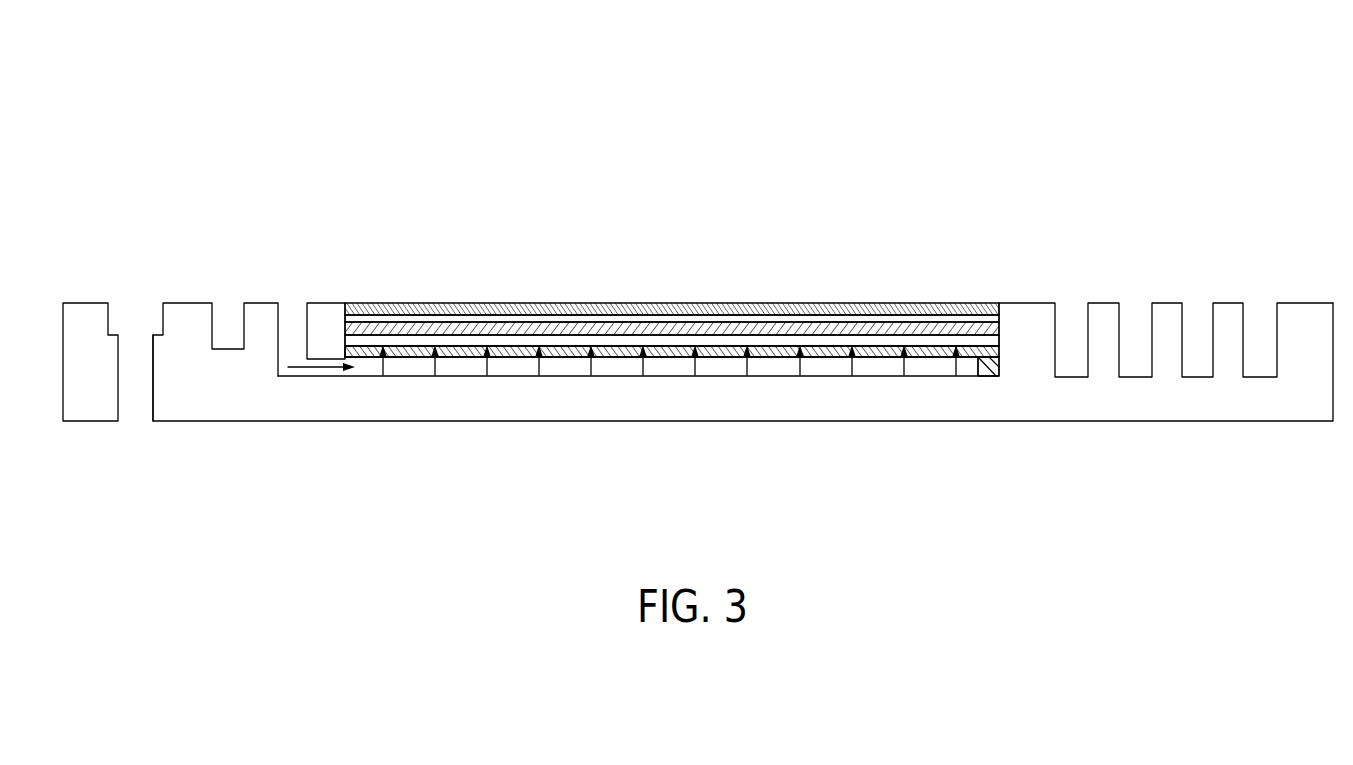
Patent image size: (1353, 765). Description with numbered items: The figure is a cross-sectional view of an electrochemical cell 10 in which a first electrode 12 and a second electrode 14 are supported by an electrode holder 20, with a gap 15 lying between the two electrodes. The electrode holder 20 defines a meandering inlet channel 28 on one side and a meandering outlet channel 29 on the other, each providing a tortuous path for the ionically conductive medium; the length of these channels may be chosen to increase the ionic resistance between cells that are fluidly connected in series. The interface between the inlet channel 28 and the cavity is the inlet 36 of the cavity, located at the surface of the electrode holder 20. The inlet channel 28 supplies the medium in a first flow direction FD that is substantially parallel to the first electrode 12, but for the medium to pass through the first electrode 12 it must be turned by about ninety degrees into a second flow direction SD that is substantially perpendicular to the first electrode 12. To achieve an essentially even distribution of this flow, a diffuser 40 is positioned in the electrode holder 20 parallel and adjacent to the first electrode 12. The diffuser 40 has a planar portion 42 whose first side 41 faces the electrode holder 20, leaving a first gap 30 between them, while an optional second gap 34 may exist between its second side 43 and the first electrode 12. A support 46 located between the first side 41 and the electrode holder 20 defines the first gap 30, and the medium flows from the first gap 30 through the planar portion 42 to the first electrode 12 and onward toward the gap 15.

The electrochemical cell 10 is at (184, 126).
The first electrode 12 is at (523, 328).
The second electrode 14 is at (757, 307).
The gap 15 is at (620, 320).
The electrode holder 20 is at (970, 407).
The inlet channel 28 is at (234, 322).
The outlet channel 29 is at (1071, 322).
The first gap 30 is at (830, 368).
The second gap 34 is at (465, 344).
The inlet of the cavity 36 is at (290, 324).
The diffuser 40 is at (573, 364).
The first side 41 is at (418, 357).
The planar portion 42 is at (875, 357).
The second side 43 is at (408, 345).
The support 46 is at (993, 370).
The first flow direction FD is at (313, 368).
The second flow direction SD is at (647, 365).